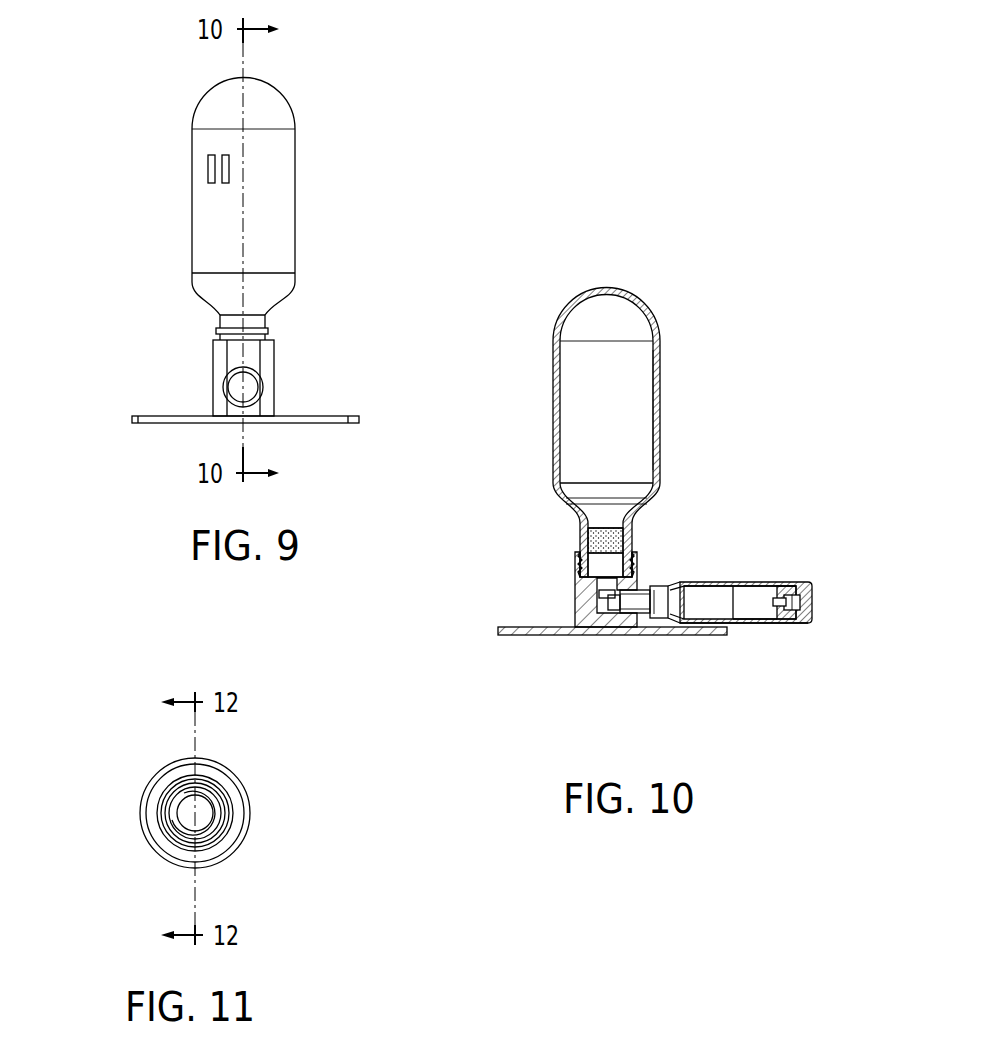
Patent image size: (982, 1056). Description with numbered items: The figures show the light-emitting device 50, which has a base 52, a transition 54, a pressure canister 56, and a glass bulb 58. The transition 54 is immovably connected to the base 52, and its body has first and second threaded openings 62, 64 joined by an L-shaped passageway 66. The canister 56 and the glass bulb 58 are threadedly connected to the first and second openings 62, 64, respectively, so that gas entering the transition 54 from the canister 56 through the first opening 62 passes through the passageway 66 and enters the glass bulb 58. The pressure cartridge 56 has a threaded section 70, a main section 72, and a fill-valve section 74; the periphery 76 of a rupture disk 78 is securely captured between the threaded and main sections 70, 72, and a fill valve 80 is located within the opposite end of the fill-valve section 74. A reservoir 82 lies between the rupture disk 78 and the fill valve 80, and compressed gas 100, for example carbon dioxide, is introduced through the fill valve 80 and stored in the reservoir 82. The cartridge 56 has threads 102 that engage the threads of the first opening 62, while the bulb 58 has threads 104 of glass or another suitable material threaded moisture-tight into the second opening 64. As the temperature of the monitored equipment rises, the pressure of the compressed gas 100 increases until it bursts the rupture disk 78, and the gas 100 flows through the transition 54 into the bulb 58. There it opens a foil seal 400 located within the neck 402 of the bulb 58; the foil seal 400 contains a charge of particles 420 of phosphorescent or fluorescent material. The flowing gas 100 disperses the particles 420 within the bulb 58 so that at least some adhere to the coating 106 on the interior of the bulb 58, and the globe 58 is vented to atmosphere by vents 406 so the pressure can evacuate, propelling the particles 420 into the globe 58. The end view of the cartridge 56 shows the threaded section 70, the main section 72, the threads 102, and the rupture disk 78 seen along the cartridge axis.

In FIG. 9, the light-emitting device 50 is at (362, 176).
In FIG. 10, the light-emitting device 50 is at (720, 392).
In FIG. 9, the base 52 is at (158, 421).
In FIG. 10, the base 52 is at (520, 636).
In FIG. 9, the transition 54 is at (268, 352).
In FIG. 10, the transition 54 is at (590, 628).
In FIG. 9, the pressure canister 56 is at (262, 387).
In FIG. 10, the pressure canister 56 is at (740, 623).
In FIG. 11, the pressure canister 56 is at (235, 848).
In FIG. 9, the glass bulb 58 is at (212, 228).
In FIG. 10, the glass bulb 58 is at (553, 372).
In FIG. 10, the first threaded opening 62 is at (628, 618).
In FIG. 10, the second threaded opening 64 is at (580, 562).
In FIG. 10, the L-shaped passageway 66 is at (600, 596).
In FIG. 11, the threaded section 70 is at (173, 840).
In FIG. 10, the main section 72 is at (700, 583).
In FIG. 11, the main section 72 is at (146, 815).
In FIG. 10, the fill-valve section 74 is at (748, 583).
In FIG. 10, the periphery 76 is at (664, 590).
In FIG. 10, the rupture disk 78 is at (660, 605).
In FIG. 11, the rupture disk 78 is at (200, 813).
In FIG. 9, the fill valve 80 is at (238, 385).
In FIG. 10, the fill valve 80 is at (793, 597).
In FIG. 10, the reservoir 82 is at (752, 605).
In FIG. 10, the compressed gas 100 is at (723, 608).
In FIG. 11, the threads 102 is at (213, 792).
In FIG. 10, the threads 104 is at (580, 550).
In FIG. 10, the coating 106 is at (653, 358).
In FIG. 10, the foil seal 400 is at (622, 527).
In FIG. 10, the neck 402 is at (636, 546).
In FIG. 9, the vents 406 is at (208, 172).
In FIG. 10, the particles 420 is at (598, 530).